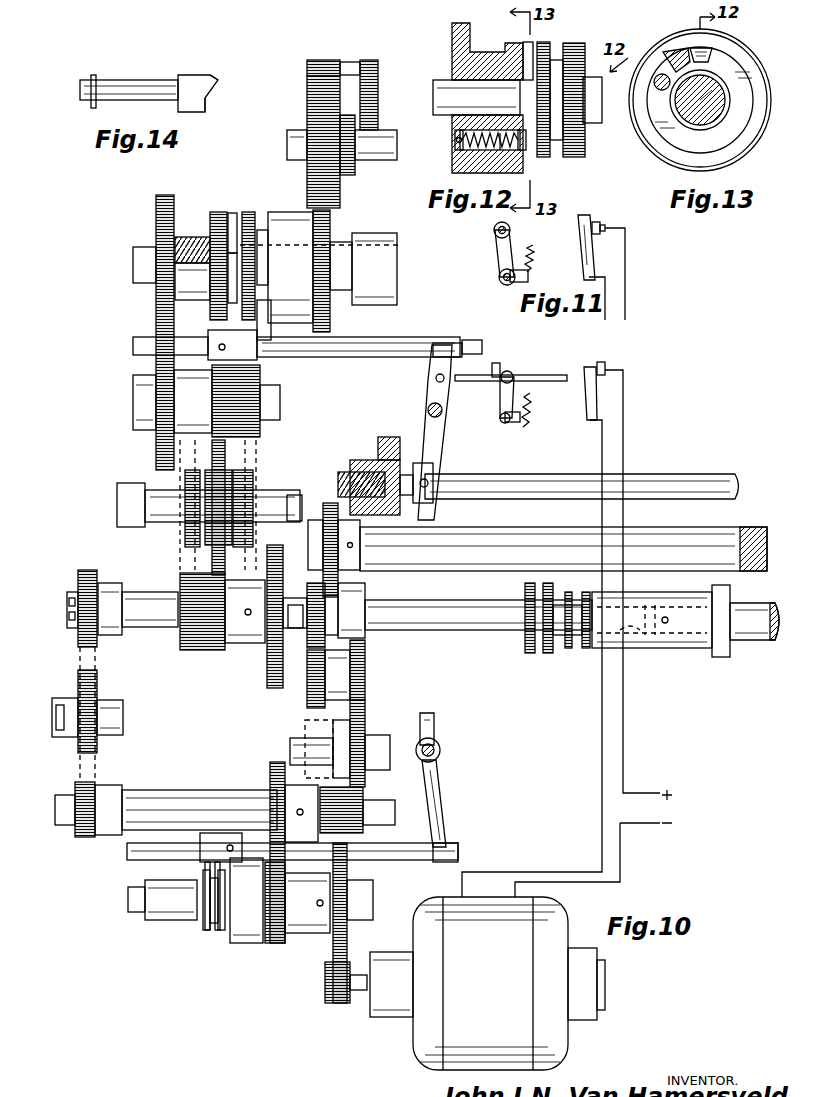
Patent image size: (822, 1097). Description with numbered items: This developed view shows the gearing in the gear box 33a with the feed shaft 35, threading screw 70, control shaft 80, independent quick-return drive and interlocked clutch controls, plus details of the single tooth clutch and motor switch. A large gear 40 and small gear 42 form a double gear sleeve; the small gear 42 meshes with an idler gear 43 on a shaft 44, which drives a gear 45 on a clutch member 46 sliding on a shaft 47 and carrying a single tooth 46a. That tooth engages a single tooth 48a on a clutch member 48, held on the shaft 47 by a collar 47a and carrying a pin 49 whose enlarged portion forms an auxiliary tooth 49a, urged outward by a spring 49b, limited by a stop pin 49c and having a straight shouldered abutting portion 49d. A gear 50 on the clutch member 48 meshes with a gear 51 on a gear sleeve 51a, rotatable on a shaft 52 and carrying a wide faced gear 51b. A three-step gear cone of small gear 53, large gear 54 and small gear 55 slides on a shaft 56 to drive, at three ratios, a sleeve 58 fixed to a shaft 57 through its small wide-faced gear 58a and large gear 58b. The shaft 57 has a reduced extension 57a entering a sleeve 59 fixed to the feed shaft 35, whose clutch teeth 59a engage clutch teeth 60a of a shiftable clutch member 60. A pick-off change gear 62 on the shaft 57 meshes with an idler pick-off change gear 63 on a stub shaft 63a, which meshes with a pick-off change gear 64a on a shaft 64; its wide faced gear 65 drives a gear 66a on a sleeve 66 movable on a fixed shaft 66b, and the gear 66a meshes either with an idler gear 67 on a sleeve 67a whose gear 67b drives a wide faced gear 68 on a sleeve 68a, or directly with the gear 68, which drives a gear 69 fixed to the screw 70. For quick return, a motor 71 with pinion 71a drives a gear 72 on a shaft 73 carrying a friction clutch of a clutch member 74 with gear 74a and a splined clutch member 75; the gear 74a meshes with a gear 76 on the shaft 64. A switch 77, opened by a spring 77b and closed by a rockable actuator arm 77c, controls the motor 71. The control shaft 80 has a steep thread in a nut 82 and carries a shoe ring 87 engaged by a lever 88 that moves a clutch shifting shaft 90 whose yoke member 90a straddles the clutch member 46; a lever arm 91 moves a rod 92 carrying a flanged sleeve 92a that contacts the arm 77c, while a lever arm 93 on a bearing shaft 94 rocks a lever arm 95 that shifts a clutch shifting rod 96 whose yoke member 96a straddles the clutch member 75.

In FIG. 10, the feed shaft 35 is at (737, 610).
In FIG. 10, the gear box 33a is at (355, 462).
In FIG. 10, the large gear 40 is at (378, 86).
In FIG. 10, the small gear 42 is at (307, 67).
In FIG. 10, the idler gear 43 is at (307, 106).
In FIG. 10, the shaft 44 is at (370, 162).
In FIG. 10, the gear 45 is at (330, 235).
In FIG. 12, the clutch member 46 is at (583, 150).
In FIG. 10, the clutch member 46 is at (282, 212).
In FIG. 12, the single tooth 46a is at (546, 46).
In FIG. 13, the single tooth 46a is at (678, 50).
In FIG. 10, the single tooth 46a is at (248, 212).
In FIG. 12, the shaft 47 is at (595, 123).
In FIG. 10, the shaft 47 is at (344, 292).
In FIG. 12, the collar 47a is at (555, 140).
In FIG. 12, the clutch member 48 is at (485, 60).
In FIG. 10, the clutch member 48 is at (215, 212).
In FIG. 12, the single tooth 48a is at (529, 42).
In FIG. 13, the single tooth 48a is at (712, 50).
In FIG. 10, the single tooth 48a is at (234, 213).
In FIG. 14, the pin 49 is at (130, 83).
In FIG. 12, the pin 49 is at (483, 150).
In FIG. 10, the pin 49 is at (190, 237).
In FIG. 14, the auxiliary tooth 49a is at (183, 75).
In FIG. 12, the auxiliary tooth 49a is at (525, 150).
In FIG. 13, the auxiliary tooth 49a is at (660, 85).
In FIG. 14, the spring 49b is at (207, 100).
In FIG. 12, the spring 49b is at (501, 150).
In FIG. 14, the stop pin 49c is at (94, 78).
In FIG. 12, the stop pin 49c is at (455, 140).
In FIG. 14, the abutting portion 49d is at (213, 78).
In FIG. 10, the gear 50 is at (156, 218).
In FIG. 10, the gear 51 is at (156, 452).
In FIG. 10, the gear sleeve 51a is at (193, 401).
In FIG. 10, the wide faced gear 51b is at (282, 395).
In FIG. 10, the shaft 52 is at (262, 416).
In FIG. 10, the small gear 53 is at (185, 540).
In FIG. 10, the large gear 54 is at (225, 462).
In FIG. 10, the small gear 55 is at (253, 495).
In FIG. 10, the shaft 56 is at (117, 510).
In FIG. 10, the shaft 57 is at (158, 628).
In FIG. 10, the reduced extension 57a is at (636, 637).
In FIG. 10, the sleeve 58 is at (240, 646).
In FIG. 10, the small wide-faced gear 58a is at (200, 650).
In FIG. 10, the large gear 58b is at (268, 662).
In FIG. 10, the sleeve 59 is at (690, 650).
In FIG. 10, the clutch teeth 59a is at (586, 648).
In FIG. 10, the shiftable clutch member 60 is at (558, 653).
In FIG. 10, the clutch teeth 60a is at (569, 648).
In FIG. 10, the pick-off change gear 62 is at (78, 640).
In FIG. 10, the idler pick-off change gear 63 is at (78, 744).
In FIG. 10, the stub shaft 63a is at (106, 735).
In FIG. 10, the shaft 64 is at (172, 783).
In FIG. 10, the pick-off change gear 64a is at (88, 837).
In FIG. 10, the wide faced gear 65 is at (364, 806).
In FIG. 10, the sleeve 66 is at (307, 724).
In FIG. 10, the gear 66a is at (365, 712).
In FIG. 10, the fixed shaft 66b is at (290, 750).
In FIG. 10, the idler gear 67 is at (365, 660).
In FIG. 10, the sleeve 67a is at (365, 678).
In FIG. 10, the gear 67b is at (307, 690).
In FIG. 10, the wide faced gear 68 is at (340, 590).
In FIG. 10, the sleeve 68a is at (365, 606).
In FIG. 10, the gear 69 is at (323, 516).
In FIG. 10, the screw 70 is at (661, 536).
In FIG. 10, the motor 71 is at (410, 1035).
In FIG. 10, the pinion 71a is at (340, 1003).
In FIG. 10, the gear 72 is at (348, 962).
In FIG. 10, the shaft 73 is at (141, 908).
In FIG. 10, the clutch member 74 is at (297, 933).
In FIG. 10, the gear 74a is at (277, 943).
In FIG. 10, the clutch member 75 is at (215, 931).
In FIG. 10, the gear 76 is at (270, 781).
In FIG. 11, the switch 77 is at (581, 236).
In FIG. 10, the switch 77 is at (586, 370).
In FIG. 11, the spring 77b is at (536, 256).
In FIG. 10, the spring 77b is at (535, 407).
In FIG. 11, the actuator arm 77c is at (500, 262).
In FIG. 10, the actuator arm 77c is at (500, 408).
In FIG. 10, the control shaft 80 is at (676, 481).
In FIG. 10, the nut 82 is at (392, 437).
In FIG. 10, the shoe ring 87 is at (433, 484).
In FIG. 10, the lever 88 is at (438, 417).
In FIG. 10, the clutch shifting shaft 90 is at (385, 342).
In FIG. 10, the yoke member 90a is at (268, 352).
In FIG. 10, the lever arm 91 is at (436, 396).
In FIG. 10, the rod 92 is at (465, 376).
In FIG. 10, the flanged sleeve 92a is at (505, 371).
In FIG. 10, the lever arm 93 is at (432, 516).
In FIG. 10, the bearing shaft 94 is at (440, 752).
In FIG. 10, the lever arm 95 is at (440, 796).
In FIG. 10, the clutch shifting rod 96 is at (412, 861).
In FIG. 10, the yoke member 96a is at (200, 855).